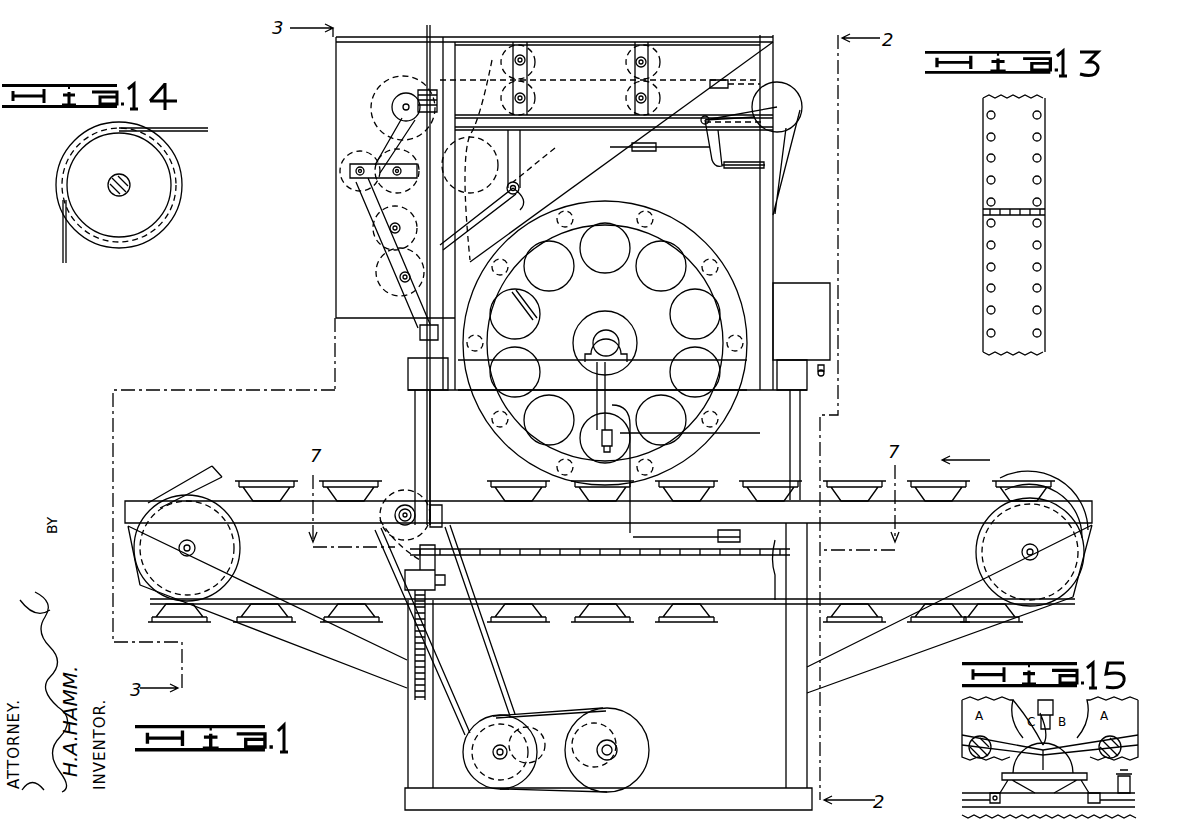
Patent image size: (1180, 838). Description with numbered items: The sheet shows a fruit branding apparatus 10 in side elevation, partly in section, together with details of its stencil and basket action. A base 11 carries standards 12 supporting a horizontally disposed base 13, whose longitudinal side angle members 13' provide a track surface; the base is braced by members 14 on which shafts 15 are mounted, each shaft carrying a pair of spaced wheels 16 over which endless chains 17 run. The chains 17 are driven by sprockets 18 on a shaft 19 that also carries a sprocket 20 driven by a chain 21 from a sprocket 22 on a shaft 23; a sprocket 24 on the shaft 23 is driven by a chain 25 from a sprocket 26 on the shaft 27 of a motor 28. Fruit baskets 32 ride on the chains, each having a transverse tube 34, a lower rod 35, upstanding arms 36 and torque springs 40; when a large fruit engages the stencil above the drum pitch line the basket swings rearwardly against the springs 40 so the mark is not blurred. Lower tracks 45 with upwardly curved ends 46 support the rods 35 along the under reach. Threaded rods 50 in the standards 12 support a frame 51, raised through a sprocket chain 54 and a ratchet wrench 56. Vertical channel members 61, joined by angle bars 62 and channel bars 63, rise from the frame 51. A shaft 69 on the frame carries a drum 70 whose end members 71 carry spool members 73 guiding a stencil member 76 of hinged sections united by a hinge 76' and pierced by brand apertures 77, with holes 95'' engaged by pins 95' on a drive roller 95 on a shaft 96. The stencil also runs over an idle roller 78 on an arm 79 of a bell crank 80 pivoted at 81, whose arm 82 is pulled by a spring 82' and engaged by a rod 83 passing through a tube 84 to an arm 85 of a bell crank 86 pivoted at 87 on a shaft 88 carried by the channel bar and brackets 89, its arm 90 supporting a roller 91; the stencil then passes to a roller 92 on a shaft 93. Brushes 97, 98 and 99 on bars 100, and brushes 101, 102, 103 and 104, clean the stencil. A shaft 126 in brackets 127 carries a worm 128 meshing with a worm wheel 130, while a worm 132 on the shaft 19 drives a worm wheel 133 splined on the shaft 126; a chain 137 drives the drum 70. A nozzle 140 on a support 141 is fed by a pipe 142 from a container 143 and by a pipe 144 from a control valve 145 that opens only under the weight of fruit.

In FIG. 1, the fruit branding apparatus 10 is at (840, 294).
In FIG. 1, the base 11 is at (718, 790).
In FIG. 1, the standards 12 is at (407, 752).
In FIG. 1, the horizontally disposed base 13 is at (621, 538).
In FIG. 1, the longitudinal side angle members 13' is at (1109, 511).
In FIG. 1, the bracing members 14 is at (326, 640).
In FIG. 1, the shafts 15 is at (194, 546).
In FIG. 1, the wheels 16 is at (232, 550).
In FIG. 1, the endless chains 17 is at (982, 500).
In FIG. 1, the sprockets 18 is at (388, 532).
In FIG. 1, the shaft 19 is at (403, 504).
In FIG. 1, the sprocket 20 is at (395, 548).
In FIG. 1, the chain 21 is at (492, 658).
In FIG. 1, the sprocket 22 is at (494, 716).
In FIG. 1, the shaft 23 is at (492, 754).
In FIG. 1, the sprocket 24 is at (528, 726).
In FIG. 1, the chain 25 is at (554, 712).
In FIG. 1, the sprocket 26 is at (600, 722).
In FIG. 1, the shaft 27 is at (610, 744).
In FIG. 1, the motor 28 is at (648, 745).
In FIG. 1, the conveyor frames or fruit baskets 32 is at (262, 480).
In FIG. 15, the conveyor frames or fruit baskets 32 is at (984, 781).
In FIG. 15, the transverse tube 34 is at (965, 793).
In FIG. 15, the rod 35 is at (1092, 793).
In FIG. 15, the upstanding arms 36 is at (1003, 774).
In FIG. 15, the torque springs 40 is at (1126, 772).
In FIG. 1, the lower tracks 45 is at (742, 620).
In FIG. 1, the curved track ends 46 is at (165, 490).
In FIG. 1, the rods 50 is at (414, 405).
In FIG. 1, the frame 51 is at (805, 380).
In FIG. 1, the sprocket chain 54 is at (592, 560).
In FIG. 1, the ratchet wrench 56 is at (404, 580).
In FIG. 1, the vertical channel members 61 is at (440, 370).
In FIG. 1, the angle bars 62 is at (680, 42).
In FIG. 1, the channel bars 63 is at (566, 118).
In FIG. 1, the shaft 69 is at (607, 330).
In FIG. 1, the drum 70 is at (690, 228).
In FIG. 15, the drum 70 is at (1136, 712).
In FIG. 1, the end members 71 is at (648, 236).
In FIG. 1, the spool members 73 is at (716, 234).
In FIG. 15, the spool members 73 is at (972, 740).
In FIG. 1, the stencil member 76 is at (793, 162).
In FIG. 13, the stencil member 76 is at (996, 225).
In FIG. 14, the stencil member 76 is at (142, 184).
In FIG. 15, the stencil member 76 is at (1050, 736).
In FIG. 13, the hinge 76' is at (1030, 205).
In FIG. 13, the apertures 77 is at (1020, 110).
In FIG. 1, the idle roller 78 is at (783, 85).
In FIG. 1, the arm 79 is at (745, 84).
In FIG. 1, the bell crank 80 is at (720, 112).
In FIG. 1, the pivot 81 is at (706, 115).
In FIG. 1, the arm 82 is at (705, 146).
In FIG. 1, the spring 82' is at (743, 176).
In FIG. 1, the rod 83 is at (660, 151).
In FIG. 1, the tube 84 is at (635, 158).
In FIG. 1, the arm 85 is at (540, 158).
In FIG. 1, the bell crank 86 is at (520, 188).
In FIG. 1, the pivot 87 is at (516, 194).
In FIG. 1, the bar 88 is at (506, 130).
In FIG. 1, the brackets 89 is at (492, 210).
In FIG. 1, the arm 90 is at (488, 162).
In FIG. 1, the roller 91 is at (470, 130).
In FIG. 1, the roller 92 is at (386, 290).
In FIG. 1, the shaft 93 is at (398, 278).
In FIG. 1, the roller 95 is at (403, 92).
In FIG. 14, the roller 95 is at (107, 185).
In FIG. 14, the pins 95' is at (139, 185).
In FIG. 13, the holes 95'' is at (1036, 224).
In FIG. 1, the shaft 96 is at (404, 106).
In FIG. 1, the brushes 97 is at (410, 226).
In FIG. 1, the brush 98 is at (346, 176).
In FIG. 1, the brush 99 is at (388, 140).
In FIG. 1, the bars 100 is at (400, 168).
In FIG. 1, the brush 101 is at (527, 45).
In FIG. 1, the brush 102 is at (533, 102).
In FIG. 1, the brush 103 is at (652, 68).
In FIG. 1, the brush 104 is at (654, 102).
In FIG. 1, the shaft 126 is at (426, 430).
In FIG. 1, the brackets 127 is at (420, 335).
In FIG. 1, the worm 128 is at (425, 90).
In FIG. 1, the worm wheel 130 is at (392, 100).
In FIG. 1, the worm 132 is at (394, 514).
In FIG. 1, the worm wheel 133 is at (444, 512).
In FIG. 1, the chain 137 is at (522, 316).
In FIG. 1, the nozzle 140 is at (601, 438).
In FIG. 1, the support 141 is at (596, 404).
In FIG. 1, the pipe 142 is at (724, 438).
In FIG. 1, the container 143 is at (822, 330).
In FIG. 1, the pipe 144 is at (650, 538).
In FIG. 1, the control valve 145 is at (720, 540).